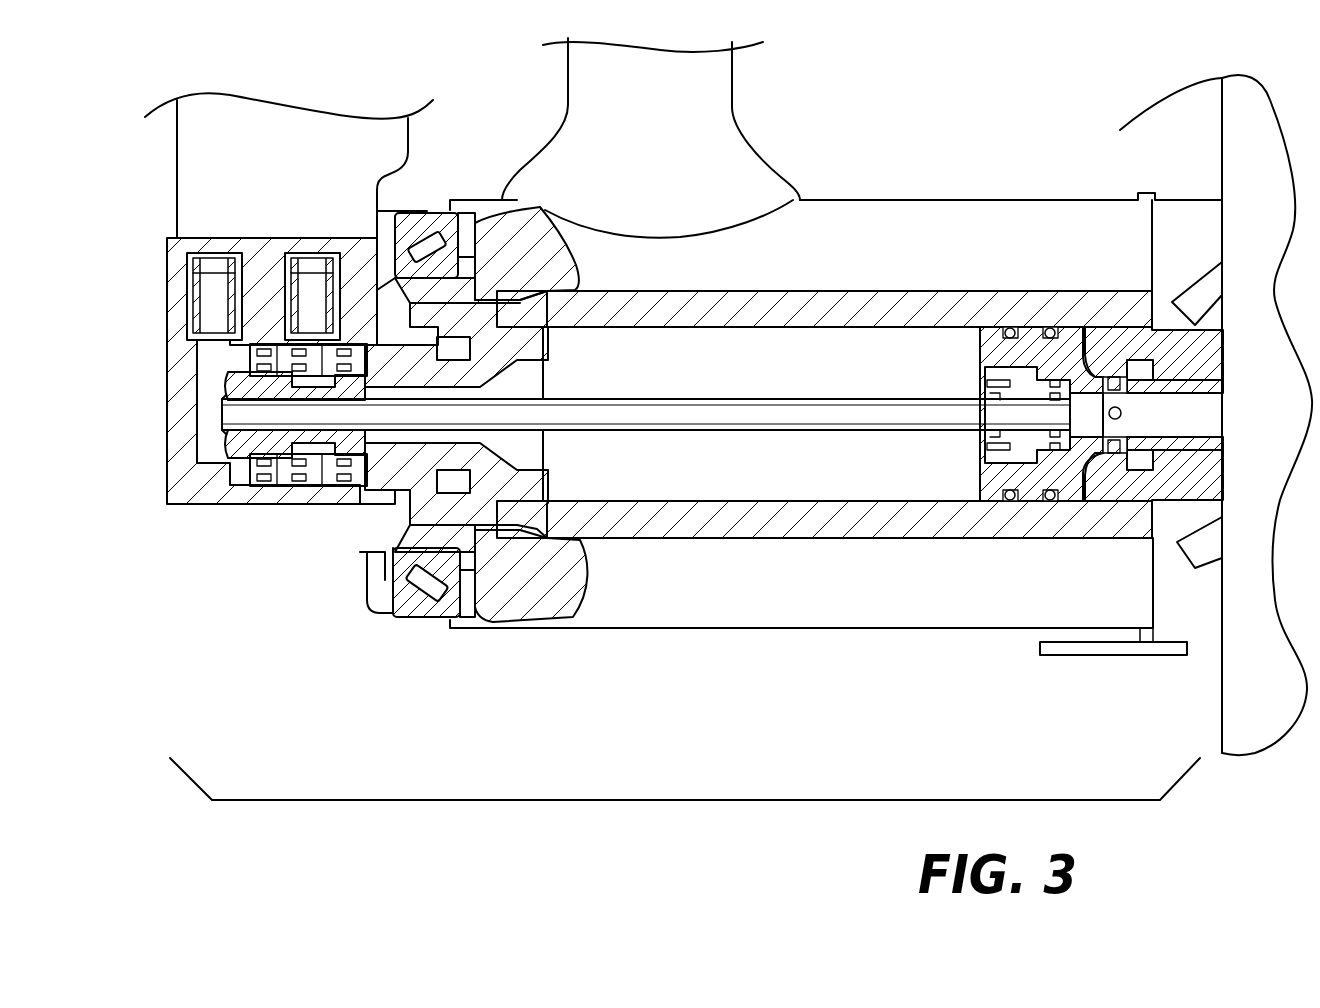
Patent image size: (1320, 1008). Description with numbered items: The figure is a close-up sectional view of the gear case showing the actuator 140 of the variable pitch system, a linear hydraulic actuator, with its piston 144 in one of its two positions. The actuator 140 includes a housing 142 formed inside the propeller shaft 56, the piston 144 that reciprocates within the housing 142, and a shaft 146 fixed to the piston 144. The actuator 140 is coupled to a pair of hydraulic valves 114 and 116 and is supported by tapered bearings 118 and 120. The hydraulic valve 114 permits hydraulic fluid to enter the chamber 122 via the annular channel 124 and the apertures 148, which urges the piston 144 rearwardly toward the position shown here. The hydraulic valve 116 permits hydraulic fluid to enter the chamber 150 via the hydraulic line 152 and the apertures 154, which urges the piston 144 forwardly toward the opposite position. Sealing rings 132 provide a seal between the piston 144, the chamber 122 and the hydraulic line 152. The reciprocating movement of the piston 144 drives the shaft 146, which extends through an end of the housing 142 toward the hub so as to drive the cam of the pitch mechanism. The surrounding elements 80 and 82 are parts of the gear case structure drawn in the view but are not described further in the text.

The propeller shaft 56 is at (566, 512).
The housing portion 80 is at (620, 130).
The bearing support body 82 is at (510, 587).
The hydraulic valve 114 is at (312, 268).
The hydraulic valve 116 is at (211, 270).
The tapered bearing 118 is at (413, 590).
The tapered bearing 120 is at (1190, 597).
The chamber 122 is at (640, 381).
The annular channel 124 is at (321, 450).
The sealing rings 132 is at (1050, 328).
The actuator 140 is at (773, 800).
The housing 142 is at (678, 483).
The piston 144 is at (978, 362).
The shaft 146 is at (1197, 382).
The apertures 148 is at (323, 380).
The chamber 150 is at (1117, 463).
The hydraulic line 152 is at (243, 410).
The apertures 154 is at (1118, 405).